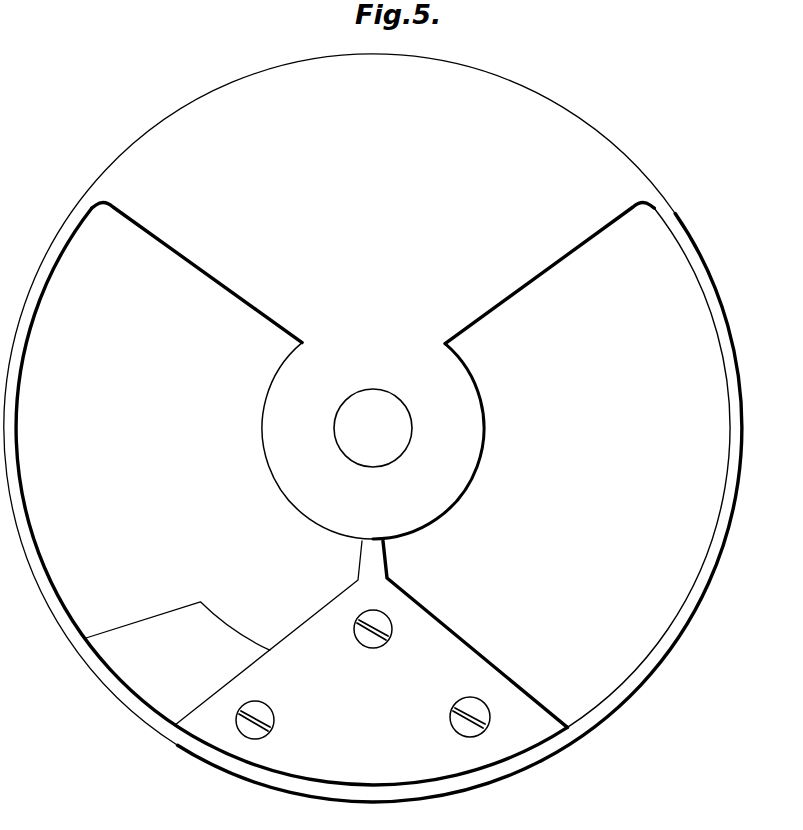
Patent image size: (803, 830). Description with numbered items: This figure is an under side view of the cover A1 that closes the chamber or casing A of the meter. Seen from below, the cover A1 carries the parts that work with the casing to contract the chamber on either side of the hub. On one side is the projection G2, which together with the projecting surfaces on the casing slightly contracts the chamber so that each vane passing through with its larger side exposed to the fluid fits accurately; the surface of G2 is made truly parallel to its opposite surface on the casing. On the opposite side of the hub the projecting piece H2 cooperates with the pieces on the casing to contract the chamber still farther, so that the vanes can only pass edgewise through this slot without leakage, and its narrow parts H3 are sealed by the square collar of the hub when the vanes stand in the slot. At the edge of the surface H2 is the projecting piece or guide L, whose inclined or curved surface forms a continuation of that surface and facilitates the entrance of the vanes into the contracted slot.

The chamber or casing A is at (373, 428).
The cover A1 is at (648, 457).
The projection G2 is at (373, 272).
The projecting piece H2 is at (291, 496).
The narrow parts H3 is at (475, 634).
The projecting piece or guide L is at (178, 633).